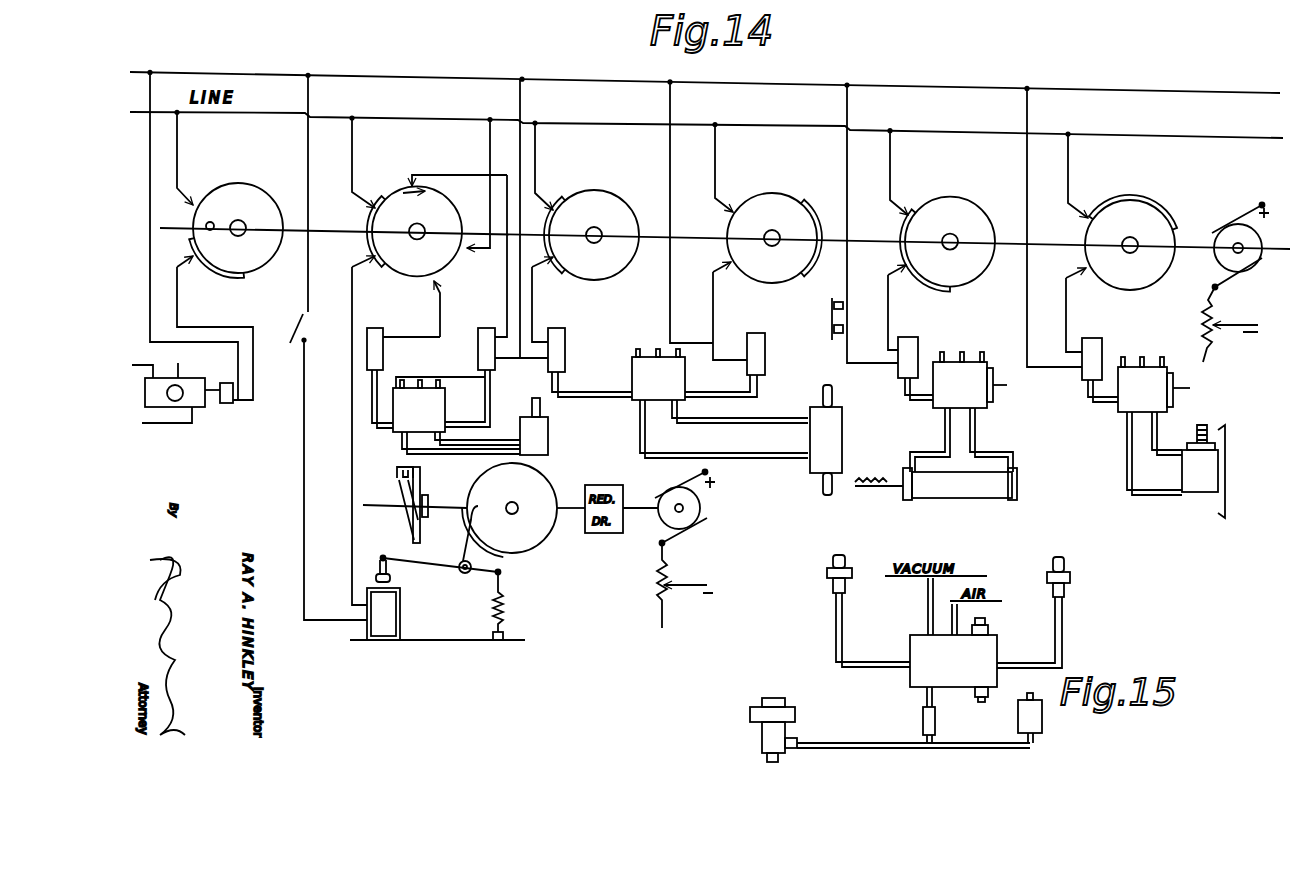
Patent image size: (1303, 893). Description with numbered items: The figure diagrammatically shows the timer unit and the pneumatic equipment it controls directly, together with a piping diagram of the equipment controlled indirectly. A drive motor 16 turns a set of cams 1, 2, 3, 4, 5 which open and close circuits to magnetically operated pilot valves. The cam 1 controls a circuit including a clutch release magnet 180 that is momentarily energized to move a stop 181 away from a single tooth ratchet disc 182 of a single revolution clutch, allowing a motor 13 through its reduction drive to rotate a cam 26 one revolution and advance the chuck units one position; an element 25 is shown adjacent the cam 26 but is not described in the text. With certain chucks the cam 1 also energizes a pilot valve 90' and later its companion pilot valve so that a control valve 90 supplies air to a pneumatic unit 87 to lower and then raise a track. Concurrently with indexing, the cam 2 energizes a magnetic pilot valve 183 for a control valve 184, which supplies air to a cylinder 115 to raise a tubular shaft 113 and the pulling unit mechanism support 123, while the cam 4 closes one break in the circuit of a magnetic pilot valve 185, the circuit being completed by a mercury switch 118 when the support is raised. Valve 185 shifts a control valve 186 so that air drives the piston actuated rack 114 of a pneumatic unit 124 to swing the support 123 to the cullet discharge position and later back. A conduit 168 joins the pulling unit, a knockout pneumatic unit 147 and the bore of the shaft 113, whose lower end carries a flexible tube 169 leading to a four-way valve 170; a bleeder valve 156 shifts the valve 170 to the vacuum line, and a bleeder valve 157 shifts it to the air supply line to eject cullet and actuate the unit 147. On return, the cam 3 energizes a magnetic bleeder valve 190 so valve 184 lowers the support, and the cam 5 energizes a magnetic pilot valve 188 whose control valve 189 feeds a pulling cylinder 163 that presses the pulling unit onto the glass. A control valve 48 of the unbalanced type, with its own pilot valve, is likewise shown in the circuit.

In FIG. 14, the cam 1 is at (414, 231).
In FIG. 14, the cam 2 is at (591, 235).
In FIG. 14, the cam 3 is at (774, 238).
In FIG. 14, the cam 4 is at (947, 245).
In FIG. 14, the cam 5 is at (1131, 242).
In FIG. 14, the motor 13 is at (700, 507).
In FIG. 14, the drive motor 16 is at (1262, 240).
In FIG. 14, the pawl hook 25 is at (408, 470).
In FIG. 14, the cam 26 is at (405, 490).
In FIG. 14, the control valve 48 is at (195, 395).
In FIG. 14, the pneumatic unit 87 is at (548, 441).
In FIG. 14, the control valve 90 is at (446, 412).
In FIG. 14, the pilot valve 90' is at (466, 349).
In FIG. 15, the tubular shaft 113 is at (935, 724).
In FIG. 14, the piston actuated rack 114 is at (892, 488).
In FIG. 14, the cylinder 115 is at (810, 437).
In FIG. 14, the mercury switch 118 is at (832, 312).
In FIG. 15, the pulling unit mechanism support 123 is at (762, 738).
In FIG. 14, the pneumatic unit 124 is at (994, 490).
In FIG. 15, the pneumatic unit 147 is at (1030, 718).
In FIG. 15, the bleeder valve 156 is at (833, 563).
In FIG. 15, the bleeder valve 157 is at (1064, 574).
In FIG. 14, the pulling cylinder 163 is at (1205, 483).
In FIG. 15, the conduit 168 is at (860, 745).
In FIG. 15, the flexible tube 169 is at (925, 698).
In FIG. 15, the four-way valve 170 is at (990, 640).
In FIG. 14, the clutch release magnet 180 is at (395, 615).
In FIG. 14, the stop 181 is at (462, 540).
In FIG. 14, the single tooth ratchet disc 182 is at (520, 535).
In FIG. 14, the magnetic pilot valve 183 is at (560, 345).
In FIG. 14, the control valve 184 is at (645, 375).
In FIG. 14, the magnetic pilot valve 185 is at (912, 352).
In FIG. 14, the control valve 186 is at (970, 390).
In FIG. 14, the magnetic pilot valve 188 is at (1095, 357).
In FIG. 14, the control valve 189 is at (1155, 385).
In FIG. 14, the magnetic bleeder valve 190 is at (765, 358).